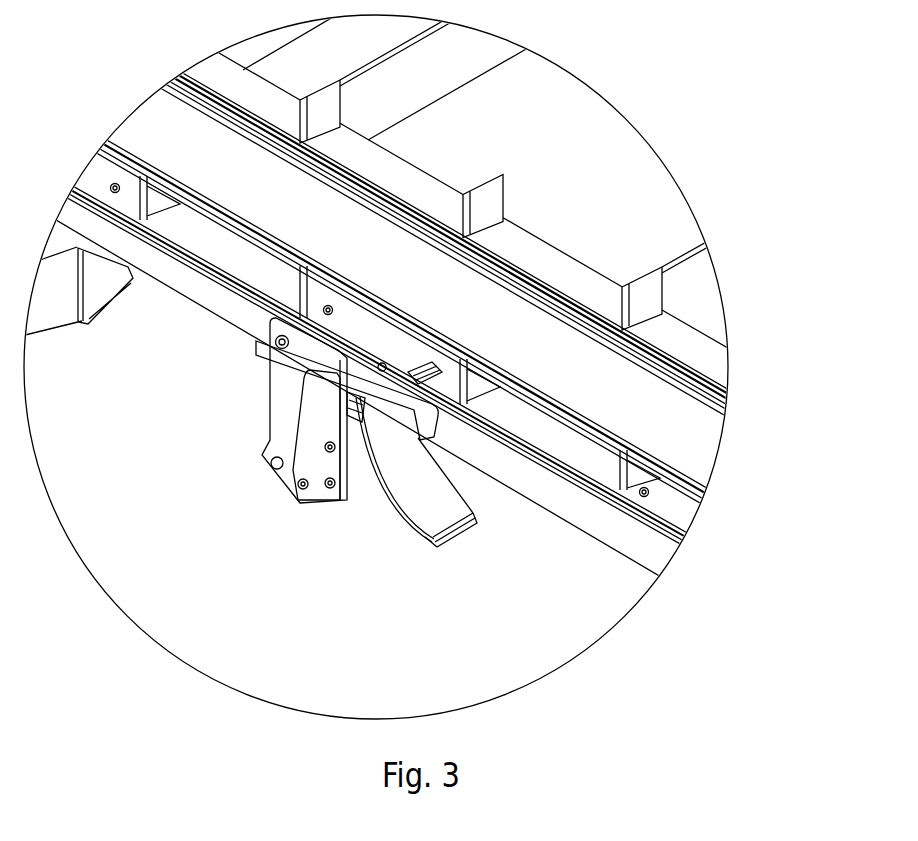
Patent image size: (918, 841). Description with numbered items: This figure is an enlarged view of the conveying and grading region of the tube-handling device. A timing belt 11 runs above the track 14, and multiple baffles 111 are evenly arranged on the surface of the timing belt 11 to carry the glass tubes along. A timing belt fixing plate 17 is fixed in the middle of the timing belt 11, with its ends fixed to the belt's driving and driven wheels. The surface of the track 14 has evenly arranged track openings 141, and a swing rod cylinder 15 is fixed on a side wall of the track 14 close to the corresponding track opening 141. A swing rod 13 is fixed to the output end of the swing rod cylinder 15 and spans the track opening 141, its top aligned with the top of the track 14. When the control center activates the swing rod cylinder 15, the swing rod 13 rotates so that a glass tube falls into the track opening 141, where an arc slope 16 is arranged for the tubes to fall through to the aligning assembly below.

The timing belt 11 is at (553, 270).
The baffle 111 is at (642, 300).
The timing belt fixing plate 17 is at (636, 410).
The track 14 is at (583, 505).
The swing rod 13 is at (288, 420).
The track opening 141 is at (362, 349).
The swing rod cylinder 15 is at (422, 388).
The arc slope 16 is at (435, 498).